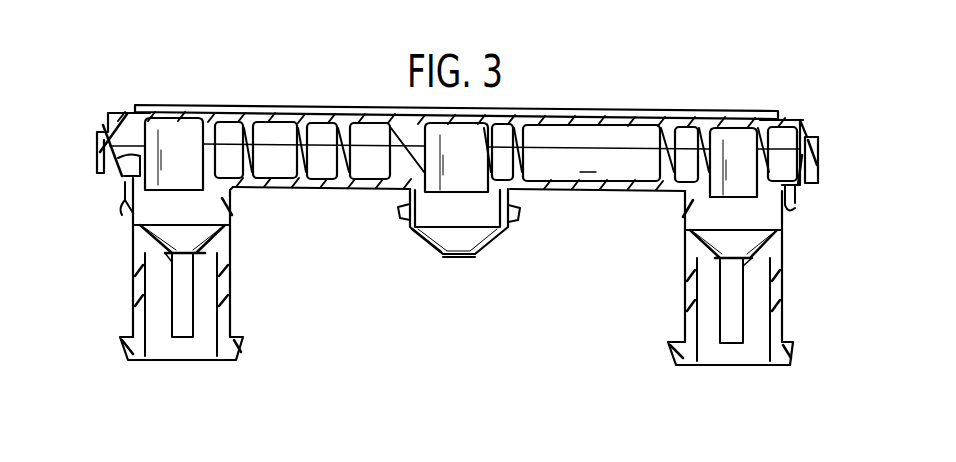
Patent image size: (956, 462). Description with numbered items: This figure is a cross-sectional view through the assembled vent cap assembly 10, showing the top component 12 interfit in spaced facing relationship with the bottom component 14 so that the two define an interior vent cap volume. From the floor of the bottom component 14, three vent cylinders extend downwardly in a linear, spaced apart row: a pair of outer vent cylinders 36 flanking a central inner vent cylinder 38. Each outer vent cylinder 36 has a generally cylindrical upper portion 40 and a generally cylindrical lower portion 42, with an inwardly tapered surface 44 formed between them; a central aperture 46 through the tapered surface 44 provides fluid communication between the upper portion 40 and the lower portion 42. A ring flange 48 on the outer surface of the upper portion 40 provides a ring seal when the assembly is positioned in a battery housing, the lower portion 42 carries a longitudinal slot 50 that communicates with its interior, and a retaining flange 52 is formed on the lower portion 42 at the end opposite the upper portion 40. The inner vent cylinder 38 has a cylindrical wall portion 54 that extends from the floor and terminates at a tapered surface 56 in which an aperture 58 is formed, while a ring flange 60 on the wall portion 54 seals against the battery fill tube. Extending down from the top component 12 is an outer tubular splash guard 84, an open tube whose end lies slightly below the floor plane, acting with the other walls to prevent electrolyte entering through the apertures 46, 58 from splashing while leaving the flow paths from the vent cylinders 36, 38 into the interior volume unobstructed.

The vent cap assembly 10 is at (318, 90).
The top component 12 is at (85, 110).
The bottom component 14 is at (120, 237).
The outer vent cylinder 36 is at (218, 373).
The inner vent cylinder 38 is at (497, 254).
The upper portion 40 is at (118, 193).
The lower portion 42 is at (229, 286).
The inwardly tapered surface 44 is at (218, 238).
The central aperture 46 is at (176, 262).
The ring flange 48 is at (247, 206).
The longitudinal slot 50 is at (190, 311).
The retaining flange 52 is at (124, 348).
The cylindrical wall portion 54 is at (520, 207).
The tapered surface 56 is at (418, 247).
The aperture 58 is at (456, 262).
The ring flange 60 is at (399, 211).
The outer tubular splash guard 84 is at (140, 156).